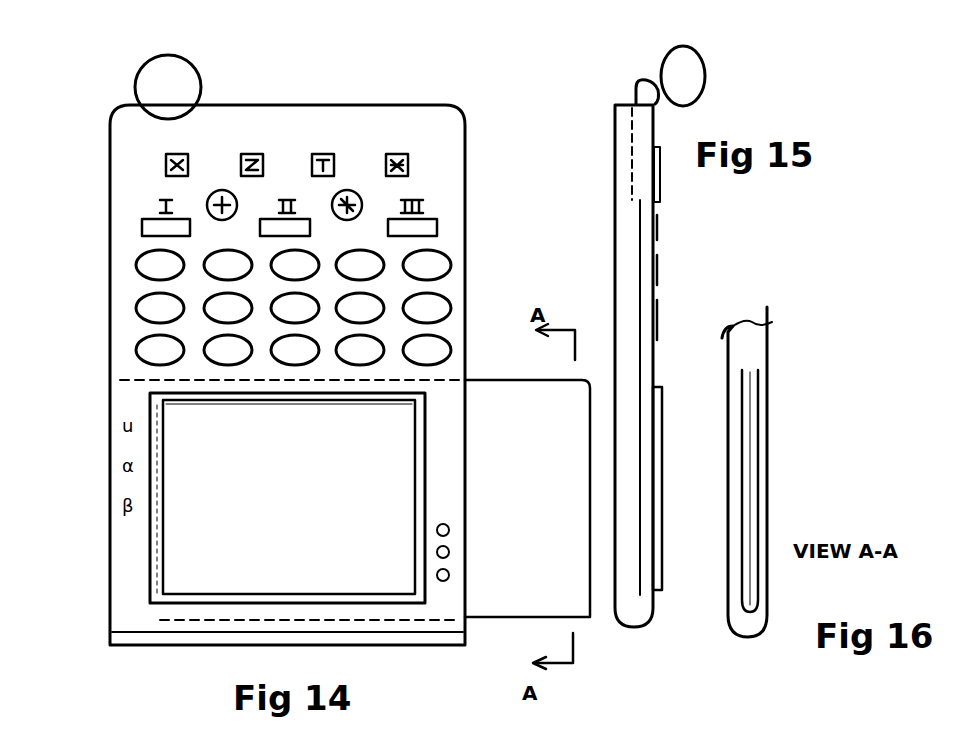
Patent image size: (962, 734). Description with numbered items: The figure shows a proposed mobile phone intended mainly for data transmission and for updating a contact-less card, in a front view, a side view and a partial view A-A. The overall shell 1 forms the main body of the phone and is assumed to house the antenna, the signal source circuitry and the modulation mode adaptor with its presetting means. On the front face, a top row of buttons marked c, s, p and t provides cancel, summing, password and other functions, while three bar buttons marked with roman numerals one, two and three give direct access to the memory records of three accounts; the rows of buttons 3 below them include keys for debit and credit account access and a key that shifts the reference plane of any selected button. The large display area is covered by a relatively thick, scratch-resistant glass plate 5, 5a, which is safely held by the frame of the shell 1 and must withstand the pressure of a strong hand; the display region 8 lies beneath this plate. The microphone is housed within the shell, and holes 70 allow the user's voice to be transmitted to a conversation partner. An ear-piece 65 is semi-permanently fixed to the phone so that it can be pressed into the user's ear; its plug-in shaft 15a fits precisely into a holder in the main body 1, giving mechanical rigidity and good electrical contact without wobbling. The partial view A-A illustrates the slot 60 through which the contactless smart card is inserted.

In FIG. 14, the shell 1 is at (463, 150).
In FIG. 16, the shell 1 is at (766, 356).
In FIG. 14, the keypad buttons 3 is at (456, 300).
In FIG. 14, the glass plate 5 is at (153, 548).
In FIG. 14, the glass plate 5a is at (110, 552).
In FIG. 15, the glass plate 5a is at (716, 515).
In FIG. 14, the display screen edge 8 is at (178, 418).
In FIG. 15, the antenna stem 15a is at (636, 84).
In FIG. 14, the slot 60 is at (549, 603).
In FIG. 16, the slot 60 is at (750, 437).
In FIG. 14, the ear-piece 65 is at (196, 62).
In FIG. 15, the ear-piece 65 is at (706, 68).
In FIG. 14, the holes 70 is at (455, 575).